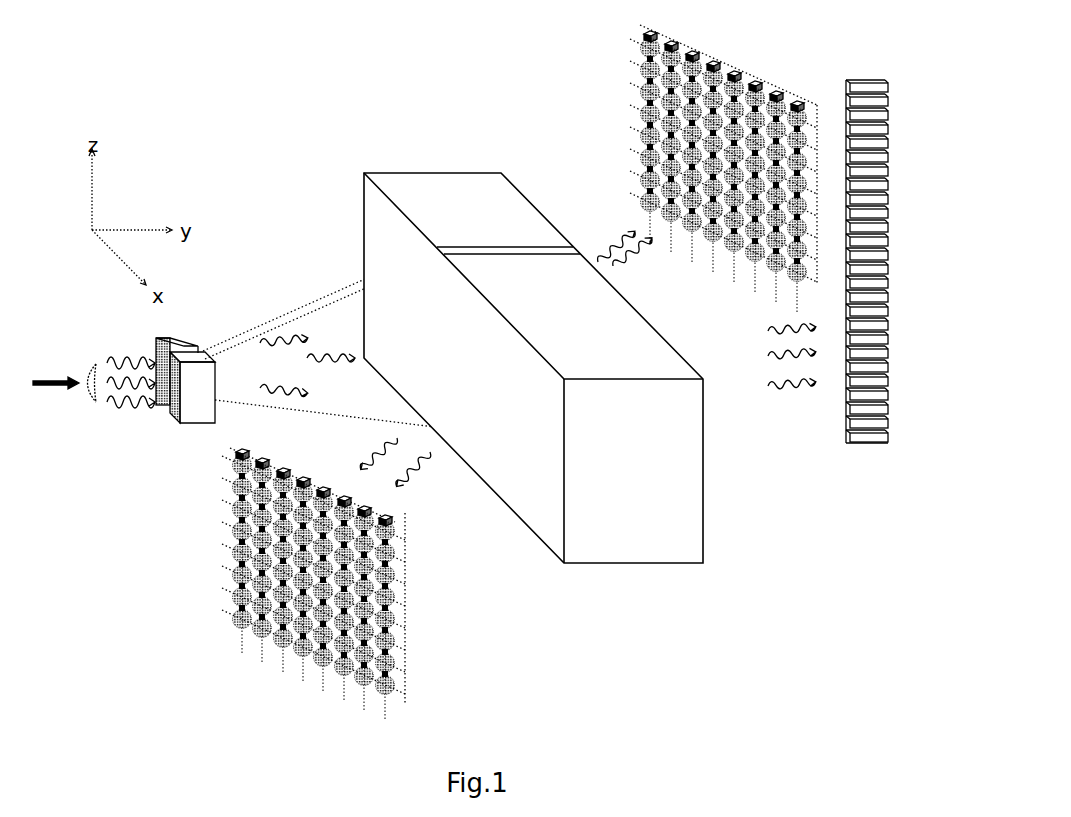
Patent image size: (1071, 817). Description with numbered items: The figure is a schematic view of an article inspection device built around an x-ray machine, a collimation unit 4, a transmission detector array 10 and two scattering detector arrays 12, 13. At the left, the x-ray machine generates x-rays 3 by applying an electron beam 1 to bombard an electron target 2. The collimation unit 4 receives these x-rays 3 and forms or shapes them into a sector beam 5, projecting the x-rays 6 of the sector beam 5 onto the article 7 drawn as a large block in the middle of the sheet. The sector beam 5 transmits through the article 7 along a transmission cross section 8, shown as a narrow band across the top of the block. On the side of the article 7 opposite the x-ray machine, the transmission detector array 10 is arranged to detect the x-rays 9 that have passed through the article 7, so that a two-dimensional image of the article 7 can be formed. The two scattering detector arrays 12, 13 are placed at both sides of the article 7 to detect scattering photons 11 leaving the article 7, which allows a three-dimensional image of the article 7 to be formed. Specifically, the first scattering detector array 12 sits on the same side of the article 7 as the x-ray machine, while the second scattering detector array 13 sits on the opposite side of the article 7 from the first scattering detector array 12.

The electron beam 1 is at (56, 373).
The electron target 2 is at (96, 366).
The x-rays 3 is at (131, 368).
The collimation unit 4 is at (178, 337).
The sector beam 5 is at (235, 333).
The x-rays of the sector beam 6 is at (307, 365).
The article 7 is at (463, 182).
The transmission cross section 8 is at (528, 247).
The transmitted x-rays 9 is at (783, 356).
The transmission detector array 10 is at (874, 80).
The scattering photons 11 is at (507, 362).
The first scattering detector array 12 is at (223, 555).
The second scattering detector array 13 is at (633, 88).